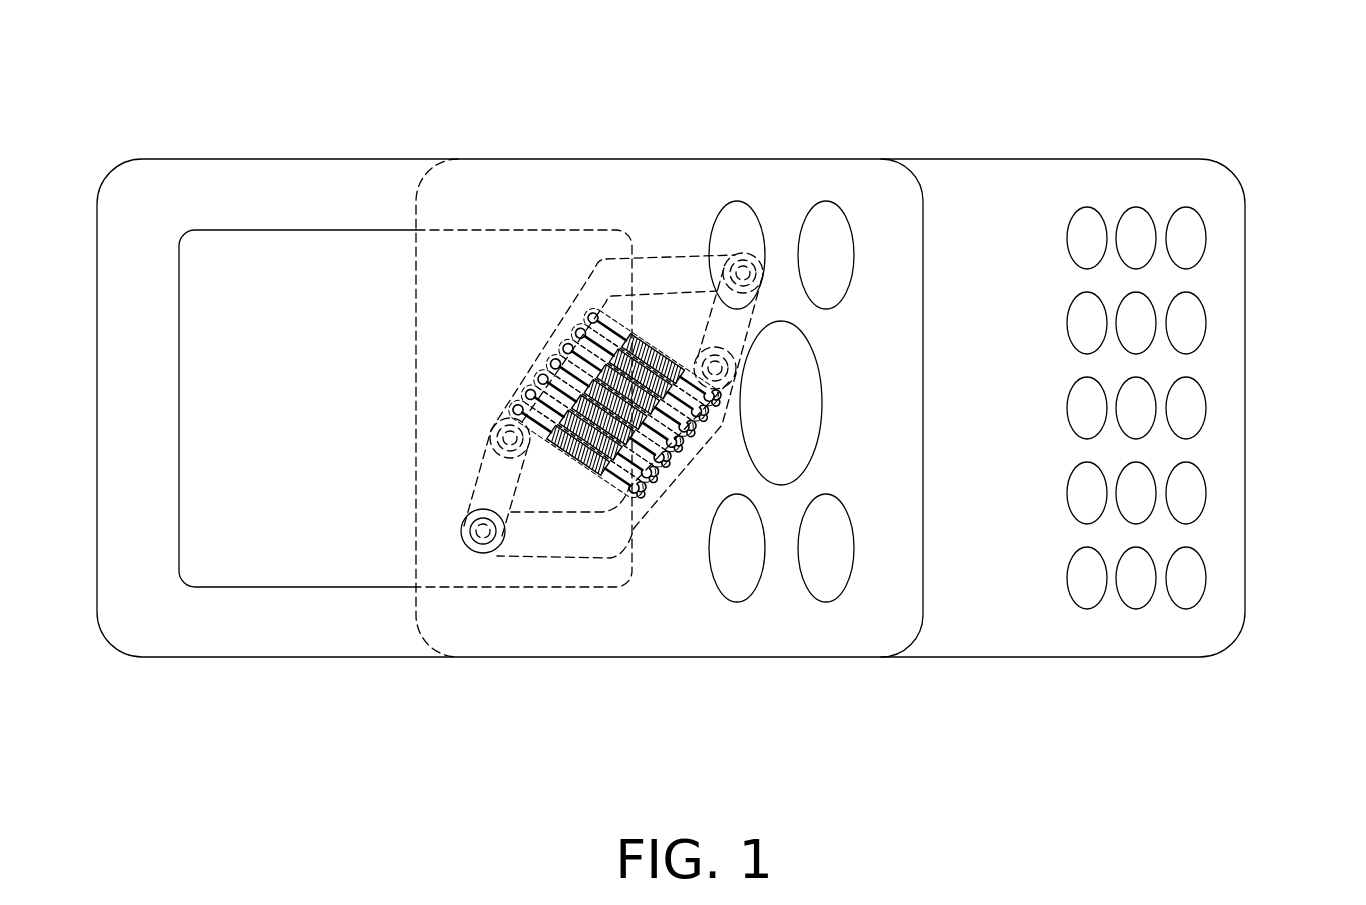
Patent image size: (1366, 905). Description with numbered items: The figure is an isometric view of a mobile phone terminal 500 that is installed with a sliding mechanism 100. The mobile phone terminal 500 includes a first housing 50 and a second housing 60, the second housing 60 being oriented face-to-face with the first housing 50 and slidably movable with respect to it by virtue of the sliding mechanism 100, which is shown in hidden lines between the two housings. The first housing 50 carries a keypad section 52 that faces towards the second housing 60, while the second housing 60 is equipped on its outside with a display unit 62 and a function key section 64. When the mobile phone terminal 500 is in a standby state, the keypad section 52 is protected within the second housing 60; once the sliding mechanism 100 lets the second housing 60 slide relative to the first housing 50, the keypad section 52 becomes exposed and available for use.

The mobile phone terminal 500 is at (645, 56).
The first housing 50 is at (1195, 645).
The keypad section 52 is at (1190, 493).
The second housing 60 is at (553, 618).
The display unit 62 is at (348, 517).
The function key section 64 is at (828, 567).
The sliding mechanism 100 is at (625, 535).